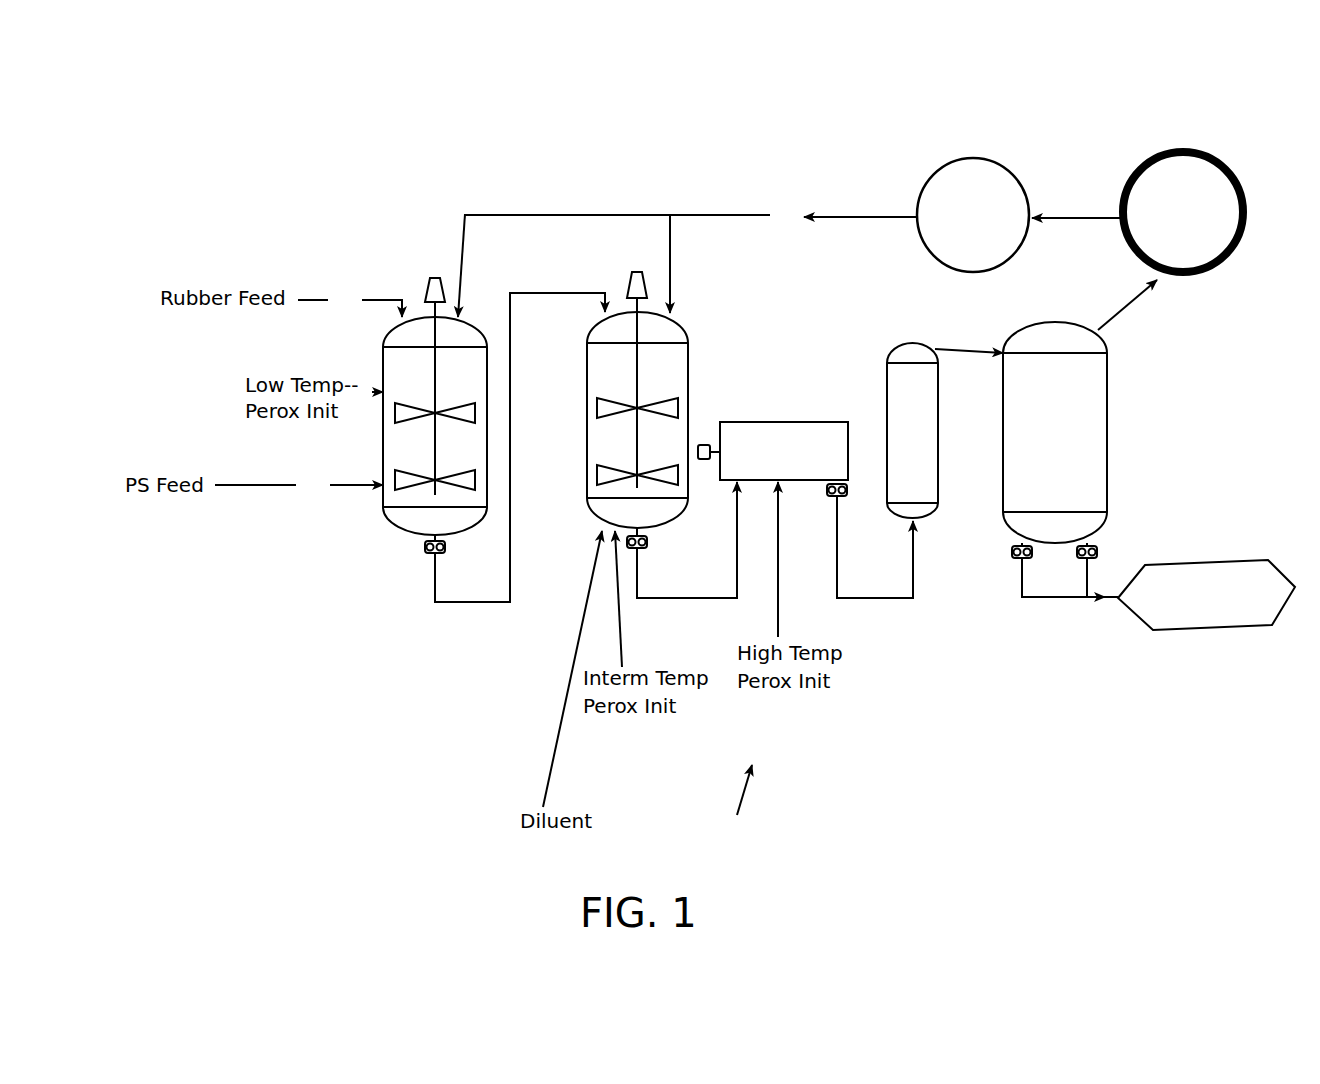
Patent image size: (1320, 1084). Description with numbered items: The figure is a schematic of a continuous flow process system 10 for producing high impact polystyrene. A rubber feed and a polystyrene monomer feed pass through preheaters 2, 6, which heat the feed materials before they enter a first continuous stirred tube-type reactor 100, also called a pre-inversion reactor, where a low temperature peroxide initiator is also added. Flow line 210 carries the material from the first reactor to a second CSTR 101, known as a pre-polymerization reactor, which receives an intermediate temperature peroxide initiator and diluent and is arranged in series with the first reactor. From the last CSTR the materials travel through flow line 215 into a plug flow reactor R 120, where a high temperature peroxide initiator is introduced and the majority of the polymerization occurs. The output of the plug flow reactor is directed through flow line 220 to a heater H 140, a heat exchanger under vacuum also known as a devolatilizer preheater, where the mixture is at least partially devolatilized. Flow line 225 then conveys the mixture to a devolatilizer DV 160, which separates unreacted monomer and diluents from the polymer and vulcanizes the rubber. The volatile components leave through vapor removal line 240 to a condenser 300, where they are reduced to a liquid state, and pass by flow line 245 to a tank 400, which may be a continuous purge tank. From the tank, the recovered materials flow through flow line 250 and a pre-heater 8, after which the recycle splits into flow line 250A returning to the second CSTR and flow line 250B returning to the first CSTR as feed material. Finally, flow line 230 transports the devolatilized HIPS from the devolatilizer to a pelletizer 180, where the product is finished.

The continuous flow process system 10 is at (747, 805).
The preheater 2 is at (350, 299).
The preheater 6 is at (299, 485).
The pre-heater 8 is at (633, 217).
The first continuous stirred tube-type reactor 100 is at (383, 362).
The second continuous stirred tube-type reactor 101 is at (688, 362).
The plug flow reactor 120 is at (773, 459).
The heater 140 is at (912, 430).
The devolatilizer 160 is at (1055, 440).
The pelletizer 180 is at (1206, 595).
The condenser 300 is at (1183, 212).
The tank 400 is at (973, 215).
The flow line 210 is at (470, 595).
The flow line 215 is at (706, 592).
The flow line 220 is at (880, 603).
The flow line 225 is at (965, 343).
The flow line 230 is at (1098, 602).
The vapor removal line 240 is at (1115, 315).
The flow line 245 is at (1073, 212).
The flow line 250 is at (866, 212).
The flow line 250A is at (716, 263).
The flow line 250B is at (510, 265).